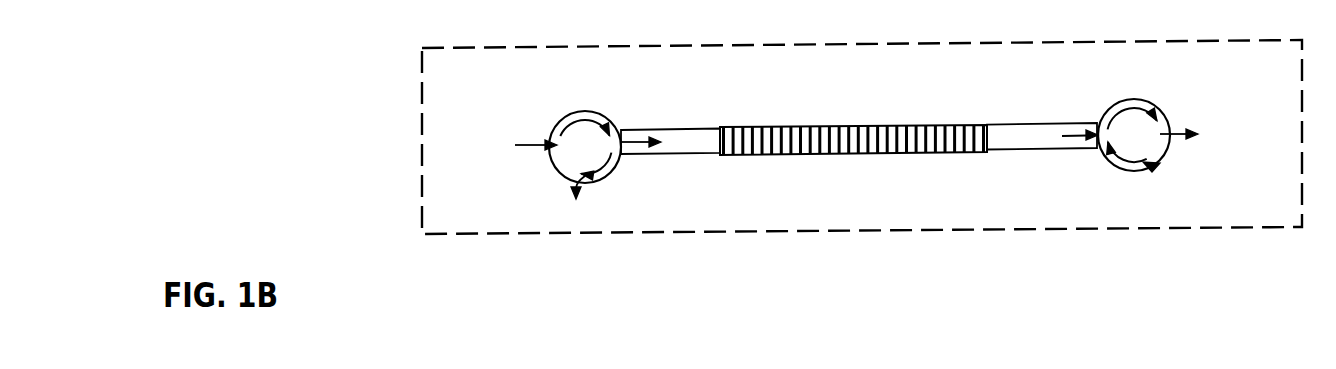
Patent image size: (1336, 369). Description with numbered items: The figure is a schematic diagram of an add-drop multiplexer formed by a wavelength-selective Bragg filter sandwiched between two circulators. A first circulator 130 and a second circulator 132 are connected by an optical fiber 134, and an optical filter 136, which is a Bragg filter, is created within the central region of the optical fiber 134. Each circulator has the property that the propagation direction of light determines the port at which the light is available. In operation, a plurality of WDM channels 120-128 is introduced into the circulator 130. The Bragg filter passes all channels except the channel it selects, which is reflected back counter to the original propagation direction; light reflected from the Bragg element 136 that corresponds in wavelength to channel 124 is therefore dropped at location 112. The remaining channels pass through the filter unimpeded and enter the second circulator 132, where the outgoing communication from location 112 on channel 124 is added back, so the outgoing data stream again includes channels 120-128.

The location 112 is at (482, 47).
The WDM channels 120-128 is at (857, 142).
The channel 124 is at (1152, 171).
The circulator 130 is at (572, 113).
The second circulator 132 is at (1133, 100).
The optical fiber 134 is at (680, 131).
The optical filter 136 is at (924, 124).